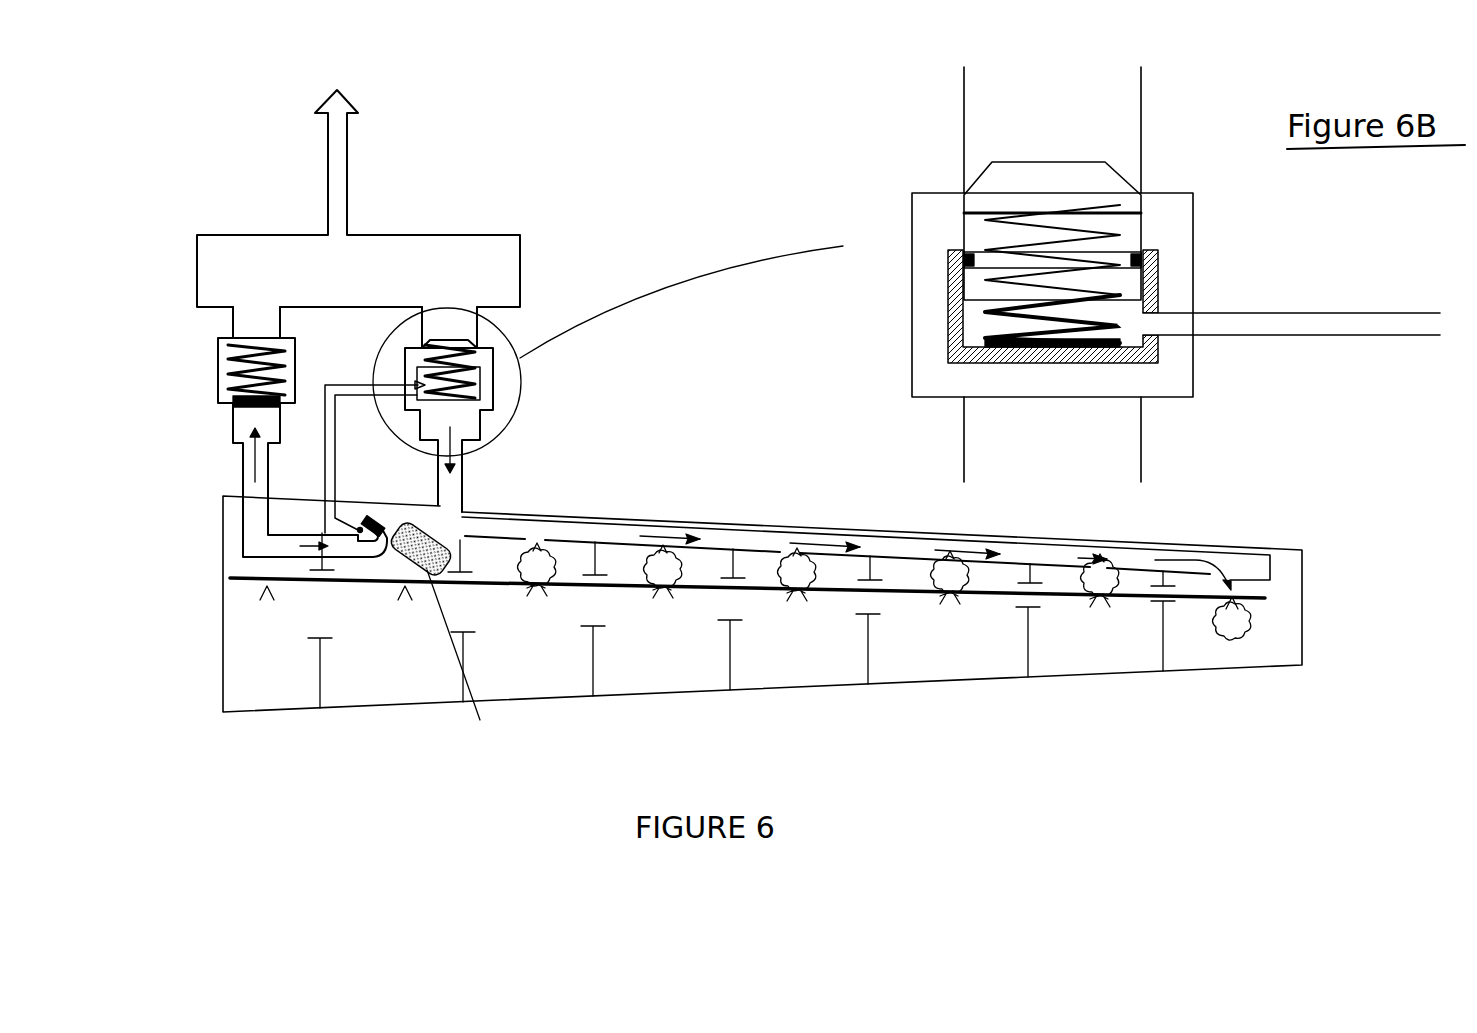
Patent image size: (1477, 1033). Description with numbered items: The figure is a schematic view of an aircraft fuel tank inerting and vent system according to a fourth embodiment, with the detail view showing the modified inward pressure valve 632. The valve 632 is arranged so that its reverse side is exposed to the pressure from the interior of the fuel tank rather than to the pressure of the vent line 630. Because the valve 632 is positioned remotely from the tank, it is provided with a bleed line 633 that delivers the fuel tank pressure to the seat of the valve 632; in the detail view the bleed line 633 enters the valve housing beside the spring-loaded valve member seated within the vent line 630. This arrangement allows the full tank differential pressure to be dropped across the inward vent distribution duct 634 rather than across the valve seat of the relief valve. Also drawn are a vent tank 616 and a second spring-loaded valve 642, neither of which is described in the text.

In FIG. 6, the vent tank 616 is at (466, 236).
In FIG. 6, the air valve 642 is at (227, 400).
In FIG. 6, the modified inward pressure valve 632 is at (497, 392).
In FIG. 6B, the modified inward pressure valve 632 is at (923, 103).
In FIG. 6, the bleed line 633 is at (335, 470).
In FIG. 6B, the bleed line 633 is at (1305, 328).
In FIG. 6, the inward vent distribution duct 634 is at (553, 510).
In FIG. 6B, the vent line 630 is at (1115, 469).